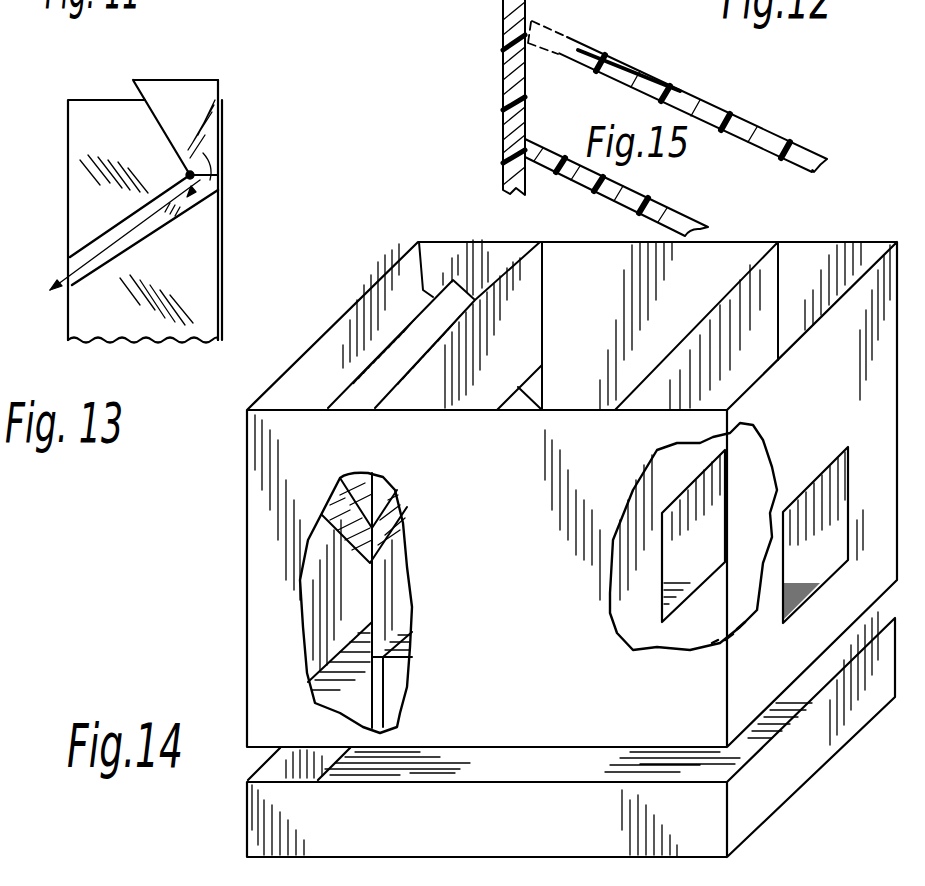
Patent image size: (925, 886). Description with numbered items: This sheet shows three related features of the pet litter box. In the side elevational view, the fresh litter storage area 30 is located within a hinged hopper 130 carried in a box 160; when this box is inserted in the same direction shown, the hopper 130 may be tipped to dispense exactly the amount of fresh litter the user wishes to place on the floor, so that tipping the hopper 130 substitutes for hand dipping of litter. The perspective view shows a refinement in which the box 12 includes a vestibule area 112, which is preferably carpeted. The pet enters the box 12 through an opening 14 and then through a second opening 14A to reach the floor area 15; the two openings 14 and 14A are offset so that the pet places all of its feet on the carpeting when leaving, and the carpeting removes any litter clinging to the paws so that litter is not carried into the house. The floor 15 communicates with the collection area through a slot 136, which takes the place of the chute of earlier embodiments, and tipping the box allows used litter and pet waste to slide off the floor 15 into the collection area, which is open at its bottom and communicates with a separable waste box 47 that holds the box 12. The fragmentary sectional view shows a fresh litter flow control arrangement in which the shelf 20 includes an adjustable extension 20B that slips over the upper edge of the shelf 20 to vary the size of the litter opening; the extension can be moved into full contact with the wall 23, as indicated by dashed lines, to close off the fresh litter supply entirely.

In FIG. 14, the box 12 is at (247, 628).
In FIG. 14, the opening 14 is at (832, 493).
In FIG. 14, the opening 14A is at (717, 470).
In FIG. 14, the slot 136 is at (397, 668).
In FIG. 14, the waste box 47 is at (247, 828).
In FIG. 14, the floor 15 is at (697, 727).
In FIG. 14, the vestibule area 112 is at (797, 668).
In FIG. 13, the hinged hopper 130 is at (152, 78).
In FIG. 13, the fresh litter storage area 30 is at (182, 115).
In FIG. 13, the box 160 is at (227, 275).
In FIG. 15, the rear wall 23 is at (503, 66).
In FIG. 15, the shelf 20 is at (715, 104).
In FIG. 15, the adjustable extension 20B is at (591, 47).